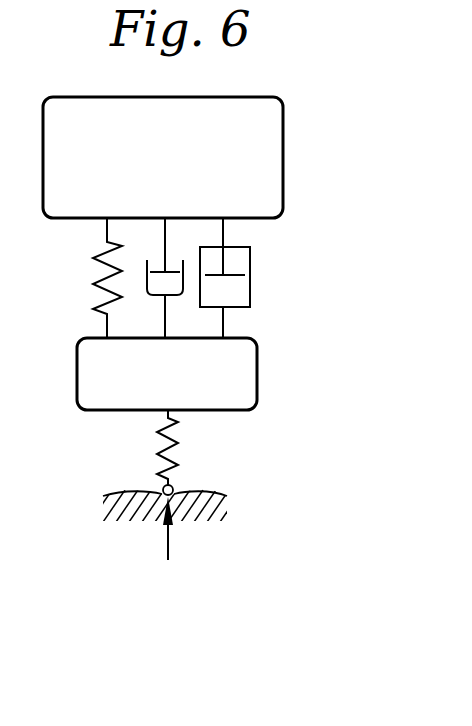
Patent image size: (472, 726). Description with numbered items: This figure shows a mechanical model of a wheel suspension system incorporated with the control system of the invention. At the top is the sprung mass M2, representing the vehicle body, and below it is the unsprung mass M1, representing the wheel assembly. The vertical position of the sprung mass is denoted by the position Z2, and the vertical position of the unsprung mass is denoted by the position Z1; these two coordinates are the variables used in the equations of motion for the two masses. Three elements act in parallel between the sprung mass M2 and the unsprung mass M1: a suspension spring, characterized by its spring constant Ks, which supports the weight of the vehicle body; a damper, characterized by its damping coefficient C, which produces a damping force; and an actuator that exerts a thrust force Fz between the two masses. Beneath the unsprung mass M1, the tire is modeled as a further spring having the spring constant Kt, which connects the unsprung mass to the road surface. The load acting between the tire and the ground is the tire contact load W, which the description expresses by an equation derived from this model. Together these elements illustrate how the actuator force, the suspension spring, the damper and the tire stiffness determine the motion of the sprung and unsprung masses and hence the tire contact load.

The sprung mass M2 is at (163, 157).
The unsprung mass M1 is at (167, 374).
The position of the sprung mass Z2 is at (283, 155).
The position of the unsprung mass Z1 is at (257, 372).
The spring constant of the suspension spring Ks is at (88, 278).
The damping coefficient of the damper C is at (165, 278).
The thrust force of the actuator Fz is at (272, 222).
The spring constant of the tire Kt is at (166, 466).
The tire contact load W is at (169, 546).